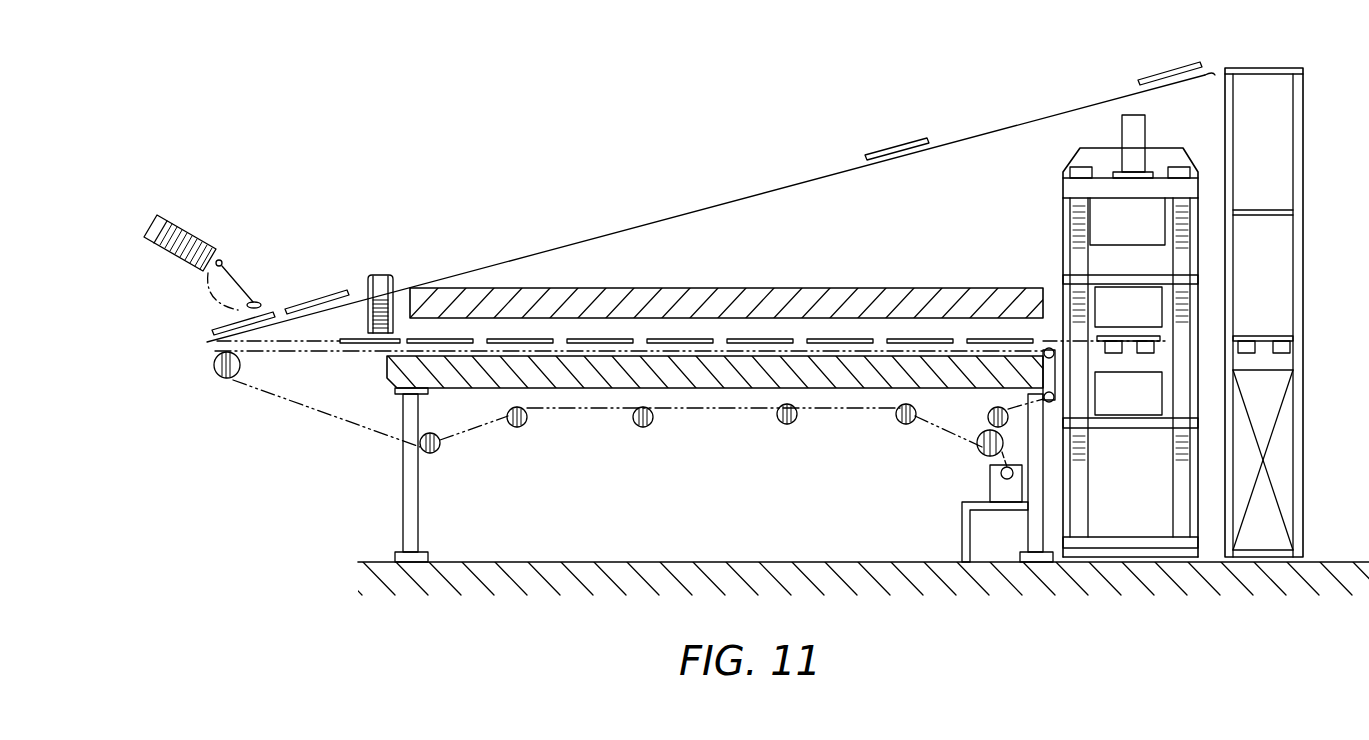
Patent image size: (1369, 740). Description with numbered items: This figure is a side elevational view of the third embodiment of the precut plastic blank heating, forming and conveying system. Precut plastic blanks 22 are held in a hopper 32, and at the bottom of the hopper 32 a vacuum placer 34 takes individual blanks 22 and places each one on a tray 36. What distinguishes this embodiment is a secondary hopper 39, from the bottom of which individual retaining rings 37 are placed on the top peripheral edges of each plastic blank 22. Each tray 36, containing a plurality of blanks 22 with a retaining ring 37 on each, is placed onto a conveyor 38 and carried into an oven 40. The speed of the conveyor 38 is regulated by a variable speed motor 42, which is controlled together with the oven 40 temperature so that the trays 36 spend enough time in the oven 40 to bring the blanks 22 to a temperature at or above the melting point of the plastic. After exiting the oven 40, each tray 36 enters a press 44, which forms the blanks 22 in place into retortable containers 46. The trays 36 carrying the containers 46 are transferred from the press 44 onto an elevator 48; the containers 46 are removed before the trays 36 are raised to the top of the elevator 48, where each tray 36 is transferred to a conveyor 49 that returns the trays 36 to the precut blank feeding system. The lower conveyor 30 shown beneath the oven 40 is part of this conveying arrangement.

The precut plastic blank 22 is at (157, 220).
The lower conveyor 30 is at (386, 366).
The hopper 32 is at (197, 228).
The vacuum placer 34 is at (245, 277).
The tray 36 is at (212, 330).
The retaining ring 37 is at (380, 296).
The conveyor 38 is at (280, 400).
The secondary hopper 39 is at (368, 278).
The oven 40 is at (557, 288).
The variable speed motor 42 is at (990, 478).
The press 44 is at (1063, 232).
The retortable container 46 is at (1157, 353).
The elevator 48 is at (1303, 250).
The conveyor 49 is at (777, 184).